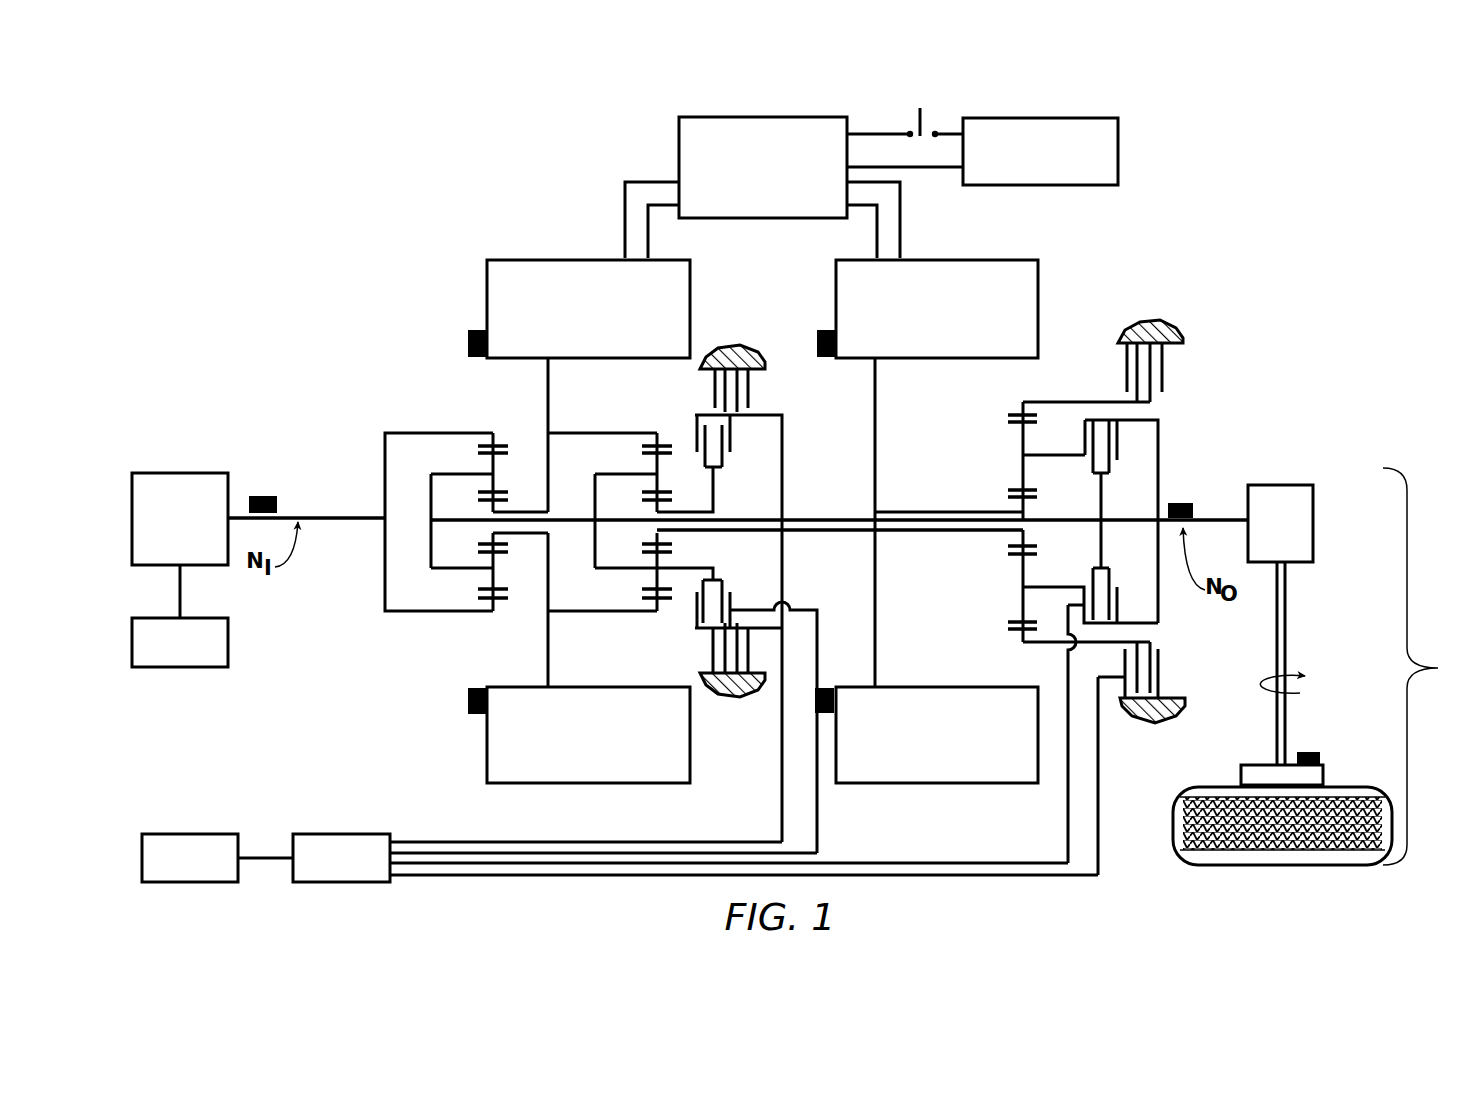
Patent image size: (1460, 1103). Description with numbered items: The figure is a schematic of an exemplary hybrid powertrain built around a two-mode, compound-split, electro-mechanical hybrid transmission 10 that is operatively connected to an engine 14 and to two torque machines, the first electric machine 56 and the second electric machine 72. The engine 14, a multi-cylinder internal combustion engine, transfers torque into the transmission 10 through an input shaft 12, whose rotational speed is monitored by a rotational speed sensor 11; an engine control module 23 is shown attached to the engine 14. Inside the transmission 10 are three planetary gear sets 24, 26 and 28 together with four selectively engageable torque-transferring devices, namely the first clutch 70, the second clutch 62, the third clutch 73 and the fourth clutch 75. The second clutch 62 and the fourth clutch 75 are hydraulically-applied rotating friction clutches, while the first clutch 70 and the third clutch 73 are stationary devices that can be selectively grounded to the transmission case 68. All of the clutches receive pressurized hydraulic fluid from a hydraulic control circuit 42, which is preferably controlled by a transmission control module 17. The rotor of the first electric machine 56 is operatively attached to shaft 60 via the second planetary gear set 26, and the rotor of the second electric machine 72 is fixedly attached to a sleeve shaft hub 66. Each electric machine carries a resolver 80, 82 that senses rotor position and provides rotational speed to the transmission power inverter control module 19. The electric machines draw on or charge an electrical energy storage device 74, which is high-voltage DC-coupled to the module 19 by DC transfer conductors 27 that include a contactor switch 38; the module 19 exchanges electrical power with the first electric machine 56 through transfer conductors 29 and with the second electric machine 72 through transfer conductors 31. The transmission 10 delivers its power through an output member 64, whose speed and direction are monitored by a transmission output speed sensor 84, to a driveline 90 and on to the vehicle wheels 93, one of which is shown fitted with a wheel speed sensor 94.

The electro-mechanical hybrid transmission 10 is at (446, 222).
The rotational speed sensor 11 is at (262, 496).
The input shaft 12 is at (342, 518).
The engine 14 is at (186, 473).
The transmission control module 17 is at (180, 834).
The transmission power inverter control module 19 is at (679, 132).
The engine control module 23 is at (228, 657).
The first planetary gear set 24 is at (483, 428).
The second planetary gear set 26 is at (655, 428).
The DC transfer conductors 27 is at (858, 133).
The third planetary gear set 28 is at (1015, 400).
The transfer conductors 29 is at (625, 215).
The transfer conductors 31 is at (900, 213).
The contactor switch 38 is at (925, 110).
The hydraulic control circuit 42 is at (310, 834).
The first electric machine 56 is at (487, 297).
The shaft 60 is at (1078, 520).
The clutch C2 62 is at (1122, 456).
The output member 64 is at (1218, 512).
The sleeve shaft hub 66 is at (912, 512).
The transmission case 68 is at (735, 350).
The clutch C1 70 is at (1122, 368).
The second electric machine 72 is at (1038, 277).
The clutch C3 73 is at (755, 390).
The electrical energy storage device 74 is at (1118, 142).
The clutch C4 75 is at (737, 455).
The resolver 80 is at (468, 344).
The resolver 82 is at (826, 330).
The transmission output speed sensor 84 is at (1185, 503).
The driveline 90 is at (1312, 666).
The vehicle wheel 93 is at (1241, 775).
The wheel speed sensor 94 is at (1308, 752).